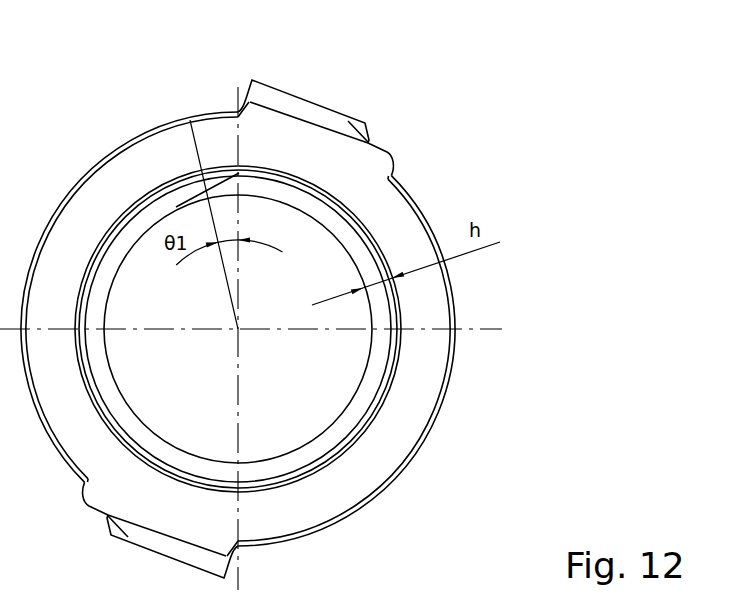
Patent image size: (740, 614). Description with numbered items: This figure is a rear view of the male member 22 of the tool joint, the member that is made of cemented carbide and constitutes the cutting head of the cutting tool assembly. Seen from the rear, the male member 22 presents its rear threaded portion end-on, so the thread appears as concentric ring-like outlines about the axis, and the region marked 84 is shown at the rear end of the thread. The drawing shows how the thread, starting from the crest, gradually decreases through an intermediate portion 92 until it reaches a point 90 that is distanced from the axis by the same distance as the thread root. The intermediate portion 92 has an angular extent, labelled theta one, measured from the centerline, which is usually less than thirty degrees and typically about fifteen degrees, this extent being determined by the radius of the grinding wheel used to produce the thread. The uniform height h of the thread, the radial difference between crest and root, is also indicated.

The male member 22 is at (445, 130).
The slit in inner ring 84 is at (236, 174).
The point 90 is at (153, 130).
The intermediate portion 92 is at (217, 185).